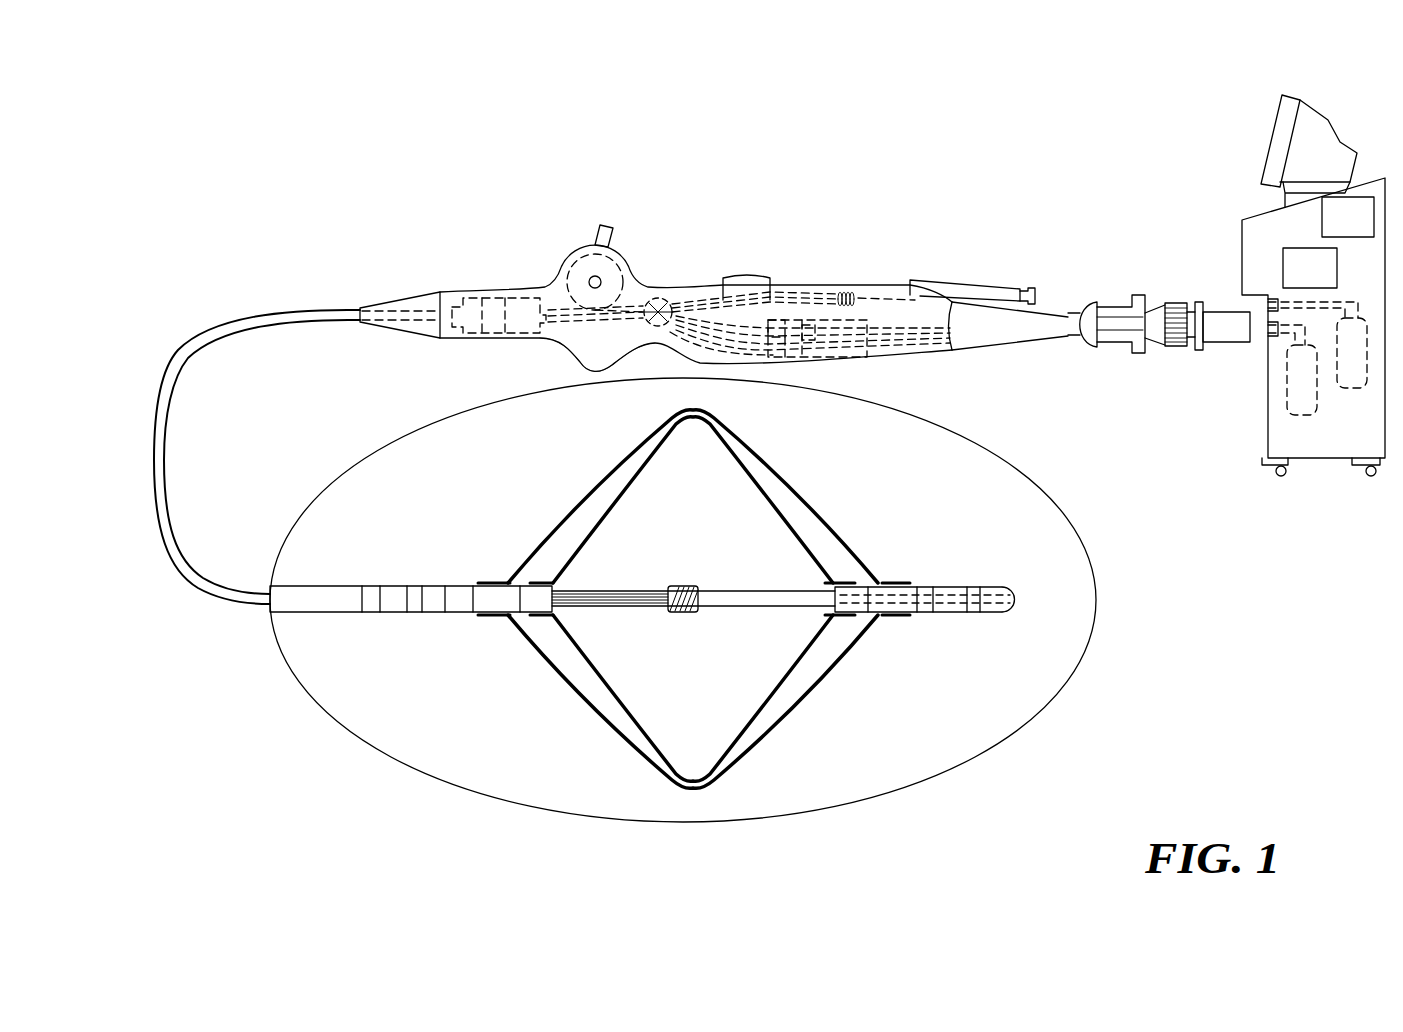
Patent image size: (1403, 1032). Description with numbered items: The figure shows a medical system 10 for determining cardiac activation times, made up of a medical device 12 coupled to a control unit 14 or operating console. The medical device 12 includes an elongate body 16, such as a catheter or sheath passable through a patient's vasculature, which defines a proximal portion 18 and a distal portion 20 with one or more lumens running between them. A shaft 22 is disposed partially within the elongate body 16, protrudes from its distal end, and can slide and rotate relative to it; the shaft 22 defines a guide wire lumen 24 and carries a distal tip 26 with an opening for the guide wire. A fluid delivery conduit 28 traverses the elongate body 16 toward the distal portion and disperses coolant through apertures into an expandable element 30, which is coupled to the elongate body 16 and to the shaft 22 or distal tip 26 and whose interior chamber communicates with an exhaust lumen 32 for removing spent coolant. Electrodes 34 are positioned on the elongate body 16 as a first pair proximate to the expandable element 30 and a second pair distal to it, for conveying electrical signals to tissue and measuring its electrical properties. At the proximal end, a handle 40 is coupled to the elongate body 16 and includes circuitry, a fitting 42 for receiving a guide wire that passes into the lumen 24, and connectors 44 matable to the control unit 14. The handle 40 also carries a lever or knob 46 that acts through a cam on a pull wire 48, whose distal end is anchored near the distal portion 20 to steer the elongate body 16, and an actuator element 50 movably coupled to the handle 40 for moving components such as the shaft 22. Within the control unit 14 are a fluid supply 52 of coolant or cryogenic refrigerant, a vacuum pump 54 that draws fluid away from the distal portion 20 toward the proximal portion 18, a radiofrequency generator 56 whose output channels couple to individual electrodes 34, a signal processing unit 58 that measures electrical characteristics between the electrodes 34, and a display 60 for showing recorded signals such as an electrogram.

The medical system 10 is at (1182, 538).
The medical device 12 is at (410, 160).
The control unit 14 is at (1241, 212).
The elongate body 16 is at (215, 345).
The proximal portion 18 is at (362, 310).
The distal portion 20 is at (868, 518).
The shaft 22 is at (764, 612).
The lumen 24 is at (1017, 598).
The distal tip 26 is at (950, 588).
The fluid delivery conduit 28 is at (675, 588).
The expandable element 30 is at (782, 477).
The exhaust lumen 32 is at (585, 615).
The electrodes 34 is at (418, 590).
The handle 40 is at (565, 350).
The fitting 42 is at (977, 284).
The connectors 44 is at (1217, 310).
The lever or knob 46 is at (606, 225).
The pull wire 48 is at (567, 262).
The actuator element 50 is at (740, 278).
The fluid supply 52 is at (1300, 418).
The vacuum pump 54 is at (1350, 390).
The radiofrequency generator 56 is at (1334, 229).
The signal processing unit 58 is at (1296, 280).
The display 60 is at (1301, 160).